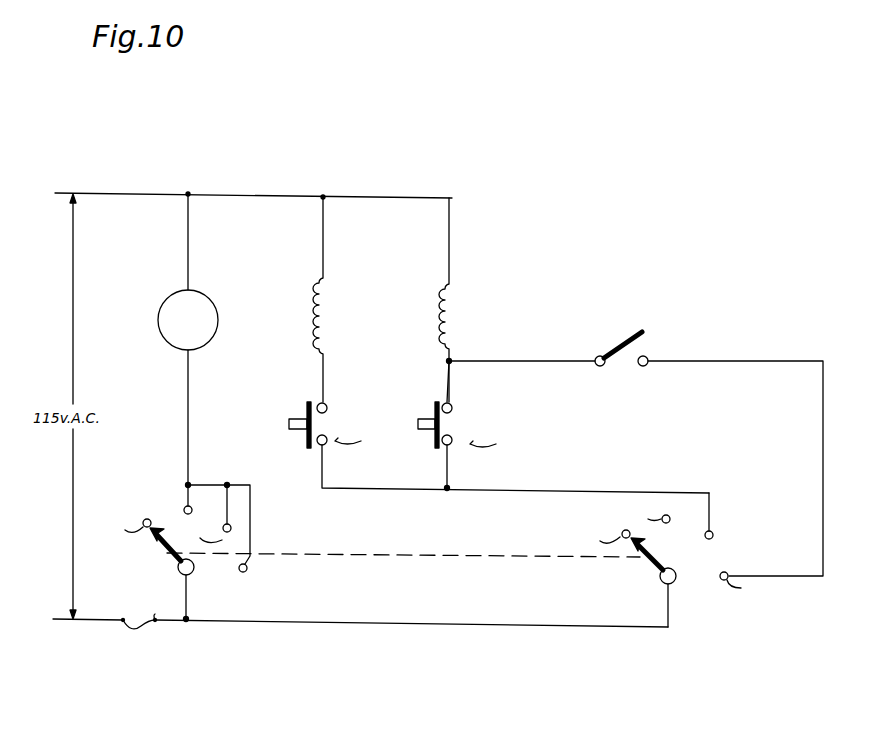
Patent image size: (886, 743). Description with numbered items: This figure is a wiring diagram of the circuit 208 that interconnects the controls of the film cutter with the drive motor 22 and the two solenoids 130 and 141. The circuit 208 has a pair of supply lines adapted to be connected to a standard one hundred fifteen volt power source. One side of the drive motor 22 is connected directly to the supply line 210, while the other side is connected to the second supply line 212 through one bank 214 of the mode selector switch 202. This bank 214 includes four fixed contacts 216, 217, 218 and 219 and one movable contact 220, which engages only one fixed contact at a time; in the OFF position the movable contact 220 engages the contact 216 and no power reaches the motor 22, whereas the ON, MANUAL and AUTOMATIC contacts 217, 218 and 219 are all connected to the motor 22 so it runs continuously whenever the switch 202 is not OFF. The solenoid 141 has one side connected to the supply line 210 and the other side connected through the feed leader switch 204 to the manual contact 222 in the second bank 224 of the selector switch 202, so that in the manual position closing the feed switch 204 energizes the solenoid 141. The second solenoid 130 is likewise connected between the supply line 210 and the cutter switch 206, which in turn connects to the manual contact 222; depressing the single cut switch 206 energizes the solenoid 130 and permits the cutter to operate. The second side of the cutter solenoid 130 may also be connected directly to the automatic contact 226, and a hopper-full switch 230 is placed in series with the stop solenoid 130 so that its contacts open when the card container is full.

The drive motor 22 is at (162, 306).
The stop solenoid 130 is at (455, 315).
The solenoid 141 is at (328, 308).
The mode selector switch 202 is at (409, 558).
The feed leader switch 204 is at (302, 419).
The cutter switch 206 is at (430, 416).
The circuit 208 is at (552, 222).
The supply line 210 is at (149, 193).
The supply line 212 is at (542, 628).
The bank 214 is at (209, 565).
The fixed contact 216 is at (148, 518).
The fixed contact 217 is at (184, 508).
The fixed contact 218 is at (230, 528).
The fixed contact 219 is at (241, 572).
The movable contact 220 is at (178, 570).
The manual contact 222 is at (712, 531).
The second bank 224 is at (693, 562).
The automatic contact 226 is at (722, 580).
The hopper-full switch 230 is at (614, 346).